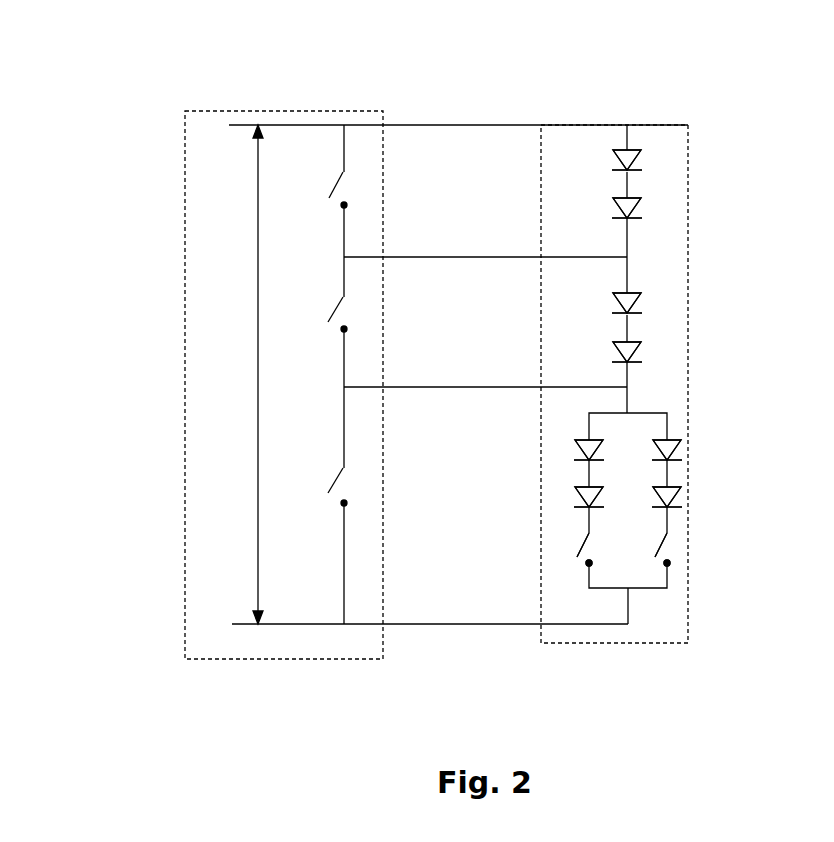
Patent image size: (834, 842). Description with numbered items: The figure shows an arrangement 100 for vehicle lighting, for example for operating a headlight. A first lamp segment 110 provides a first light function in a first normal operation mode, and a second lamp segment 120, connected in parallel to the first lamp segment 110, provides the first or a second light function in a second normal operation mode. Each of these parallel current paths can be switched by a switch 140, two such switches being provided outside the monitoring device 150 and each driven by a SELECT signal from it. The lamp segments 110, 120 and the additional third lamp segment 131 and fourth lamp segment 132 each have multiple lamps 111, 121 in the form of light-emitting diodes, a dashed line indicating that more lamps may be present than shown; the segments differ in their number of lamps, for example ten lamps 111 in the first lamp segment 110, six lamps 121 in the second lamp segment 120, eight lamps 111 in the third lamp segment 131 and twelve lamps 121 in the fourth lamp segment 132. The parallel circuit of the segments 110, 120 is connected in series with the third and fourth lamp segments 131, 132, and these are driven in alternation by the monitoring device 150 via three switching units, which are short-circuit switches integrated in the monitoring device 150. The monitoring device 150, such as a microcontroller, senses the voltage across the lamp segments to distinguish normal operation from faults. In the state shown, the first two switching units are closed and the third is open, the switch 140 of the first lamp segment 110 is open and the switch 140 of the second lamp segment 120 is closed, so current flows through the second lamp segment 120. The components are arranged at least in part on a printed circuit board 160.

The arrangement 100 is at (108, 87).
The first lamp segment 110 is at (552, 432).
The lamp 111 is at (600, 498).
The second lamp segment 120 is at (697, 432).
The lamp 121 is at (748, 567).
The third lamp segment 131 is at (670, 137).
The fourth lamp segment 132 is at (670, 278).
The switch 140 is at (578, 562).
The monitoring device 150 is at (185, 627).
The printed circuit board 160 is at (688, 610).